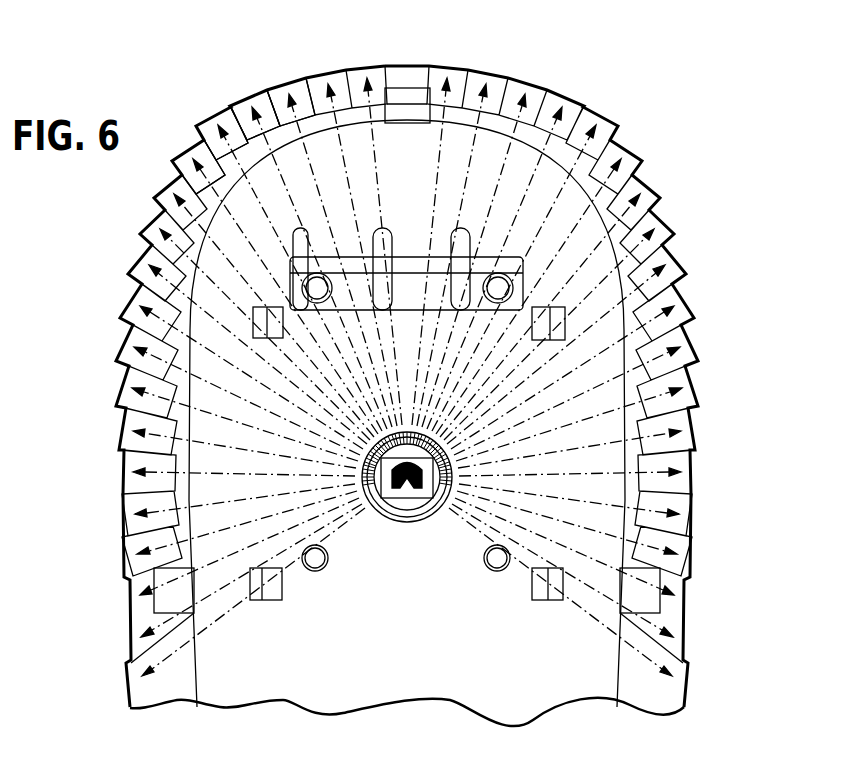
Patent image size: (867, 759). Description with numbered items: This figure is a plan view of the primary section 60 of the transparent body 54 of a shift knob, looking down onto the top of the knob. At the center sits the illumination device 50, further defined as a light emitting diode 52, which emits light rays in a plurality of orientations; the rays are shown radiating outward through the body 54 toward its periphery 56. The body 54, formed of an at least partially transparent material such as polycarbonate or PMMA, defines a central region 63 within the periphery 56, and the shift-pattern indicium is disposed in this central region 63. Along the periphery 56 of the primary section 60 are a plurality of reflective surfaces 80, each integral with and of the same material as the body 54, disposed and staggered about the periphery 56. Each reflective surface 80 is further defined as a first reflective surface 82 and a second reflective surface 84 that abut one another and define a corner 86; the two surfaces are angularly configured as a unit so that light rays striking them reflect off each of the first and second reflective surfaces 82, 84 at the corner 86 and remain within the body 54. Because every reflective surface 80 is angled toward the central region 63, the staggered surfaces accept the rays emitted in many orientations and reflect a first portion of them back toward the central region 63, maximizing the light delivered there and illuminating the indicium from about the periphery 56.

The illumination device 50 is at (398, 487).
The light emitting diode 52 is at (407, 490).
The body 54 is at (383, 128).
The periphery 56 is at (593, 113).
The primary section 60 is at (433, 133).
The central region 63 is at (408, 240).
The reflective surface 80 is at (278, 92).
The first reflective surface 82 is at (245, 108).
The second reflective surface 84 is at (263, 100).
The corner 86 is at (322, 75).